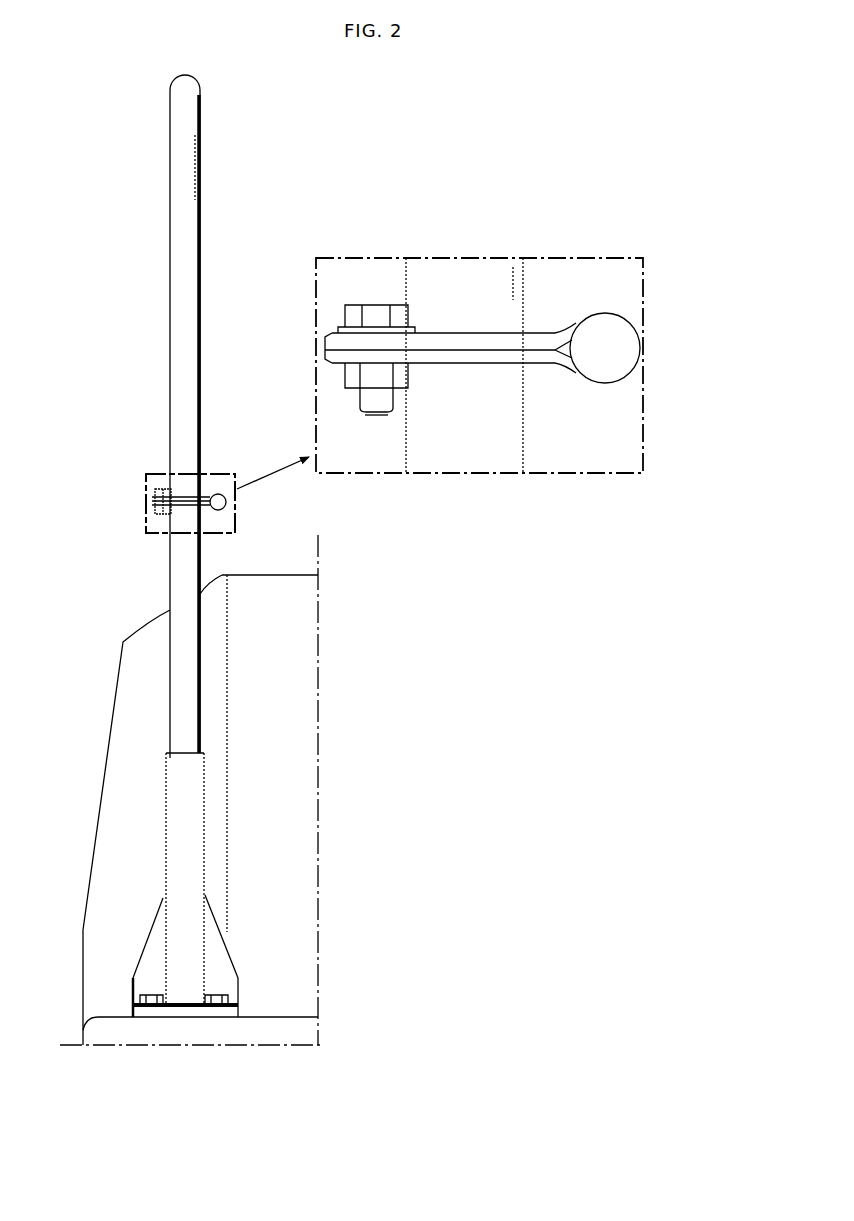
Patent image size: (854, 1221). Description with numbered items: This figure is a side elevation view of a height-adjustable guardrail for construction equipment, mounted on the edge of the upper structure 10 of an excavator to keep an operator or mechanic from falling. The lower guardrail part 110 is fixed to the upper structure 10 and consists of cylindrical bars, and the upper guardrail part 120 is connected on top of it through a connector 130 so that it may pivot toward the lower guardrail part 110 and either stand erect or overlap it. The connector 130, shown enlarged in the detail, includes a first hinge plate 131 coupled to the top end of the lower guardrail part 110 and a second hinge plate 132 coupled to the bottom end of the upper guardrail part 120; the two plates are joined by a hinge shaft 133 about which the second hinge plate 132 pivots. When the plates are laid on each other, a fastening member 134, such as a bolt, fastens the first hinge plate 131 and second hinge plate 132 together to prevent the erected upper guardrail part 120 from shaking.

The upper structure 10 is at (300, 707).
The lower guardrail part 110 is at (180, 575).
The upper guardrail part 120 is at (178, 350).
The connector 130 is at (140, 488).
The first hinge plate 131 is at (327, 365).
The second hinge plate 132 is at (332, 330).
The hinge shaft 133 is at (636, 344).
The fastening member 134 is at (375, 300).